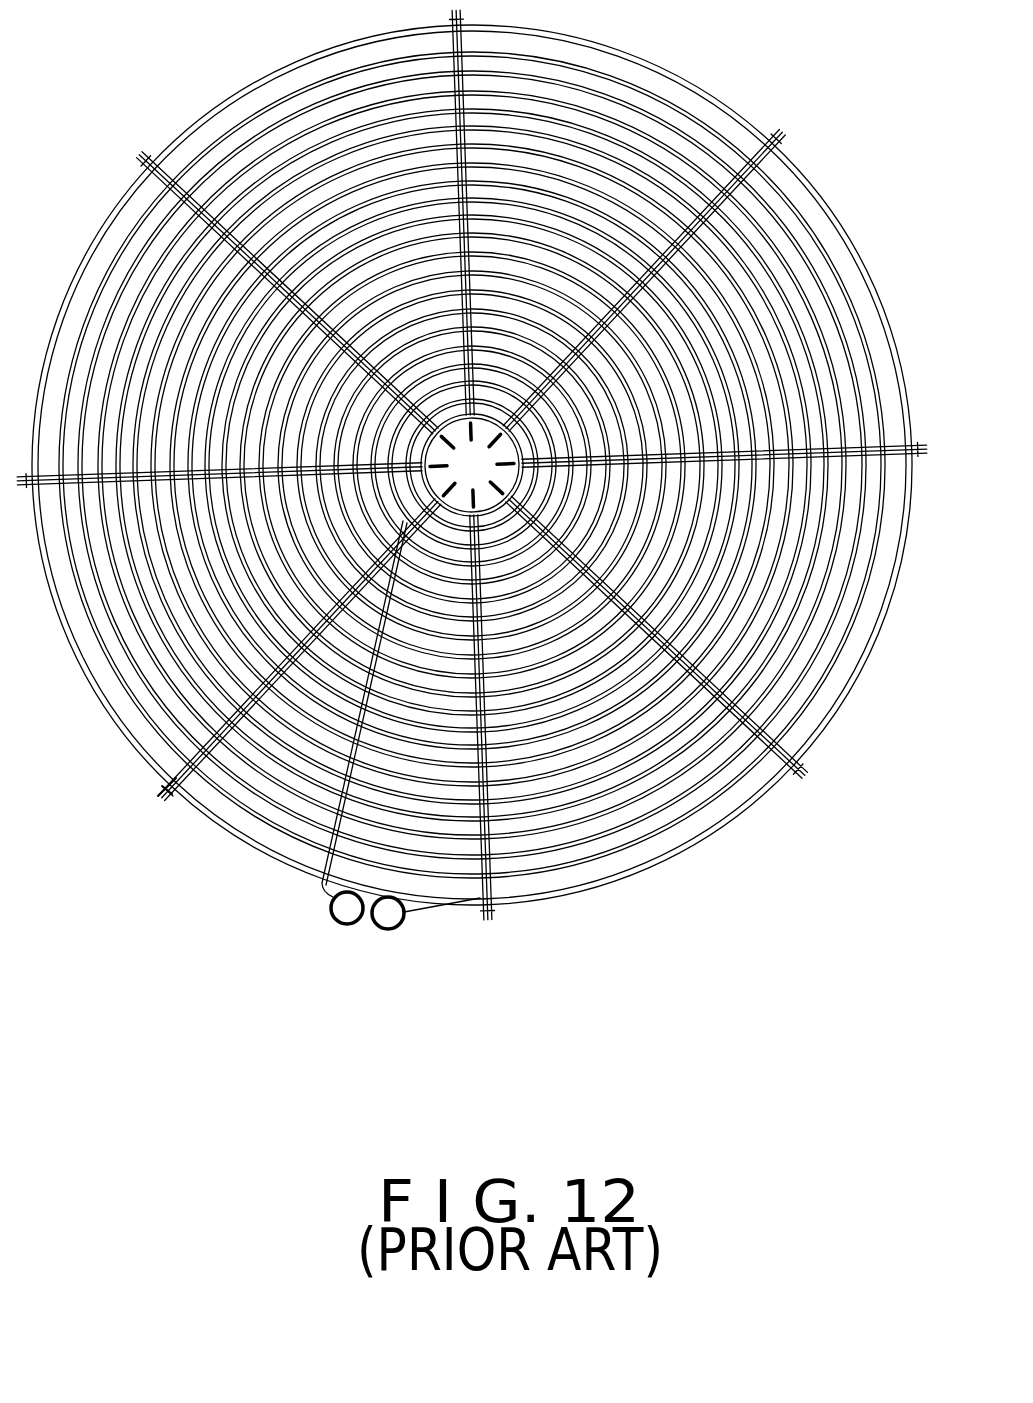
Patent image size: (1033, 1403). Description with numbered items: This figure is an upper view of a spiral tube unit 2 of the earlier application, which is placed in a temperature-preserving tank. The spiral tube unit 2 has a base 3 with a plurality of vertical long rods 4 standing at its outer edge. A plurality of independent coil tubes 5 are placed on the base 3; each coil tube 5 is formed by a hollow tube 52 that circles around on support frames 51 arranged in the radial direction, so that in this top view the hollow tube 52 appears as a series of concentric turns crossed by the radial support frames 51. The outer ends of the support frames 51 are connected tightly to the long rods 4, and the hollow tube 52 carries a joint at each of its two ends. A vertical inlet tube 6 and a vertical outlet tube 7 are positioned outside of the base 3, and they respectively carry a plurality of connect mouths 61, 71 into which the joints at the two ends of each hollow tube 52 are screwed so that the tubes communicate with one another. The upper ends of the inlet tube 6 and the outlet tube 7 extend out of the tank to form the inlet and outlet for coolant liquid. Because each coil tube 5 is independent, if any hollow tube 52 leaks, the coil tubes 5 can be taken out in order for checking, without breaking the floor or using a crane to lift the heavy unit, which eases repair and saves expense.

The spiral tube unit 2 is at (156, 1060).
The base 3 is at (112, 706).
The vertical long rod 4 is at (165, 767).
The coil tube 5 is at (652, 1038).
The support frame 51 is at (212, 770).
The hollow tube 52 is at (600, 862).
The vertical inlet tube 6 is at (347, 926).
The connect mouth 61 is at (333, 896).
The vertical outlet tube 7 is at (405, 916).
The connect mouth 71 is at (400, 914).